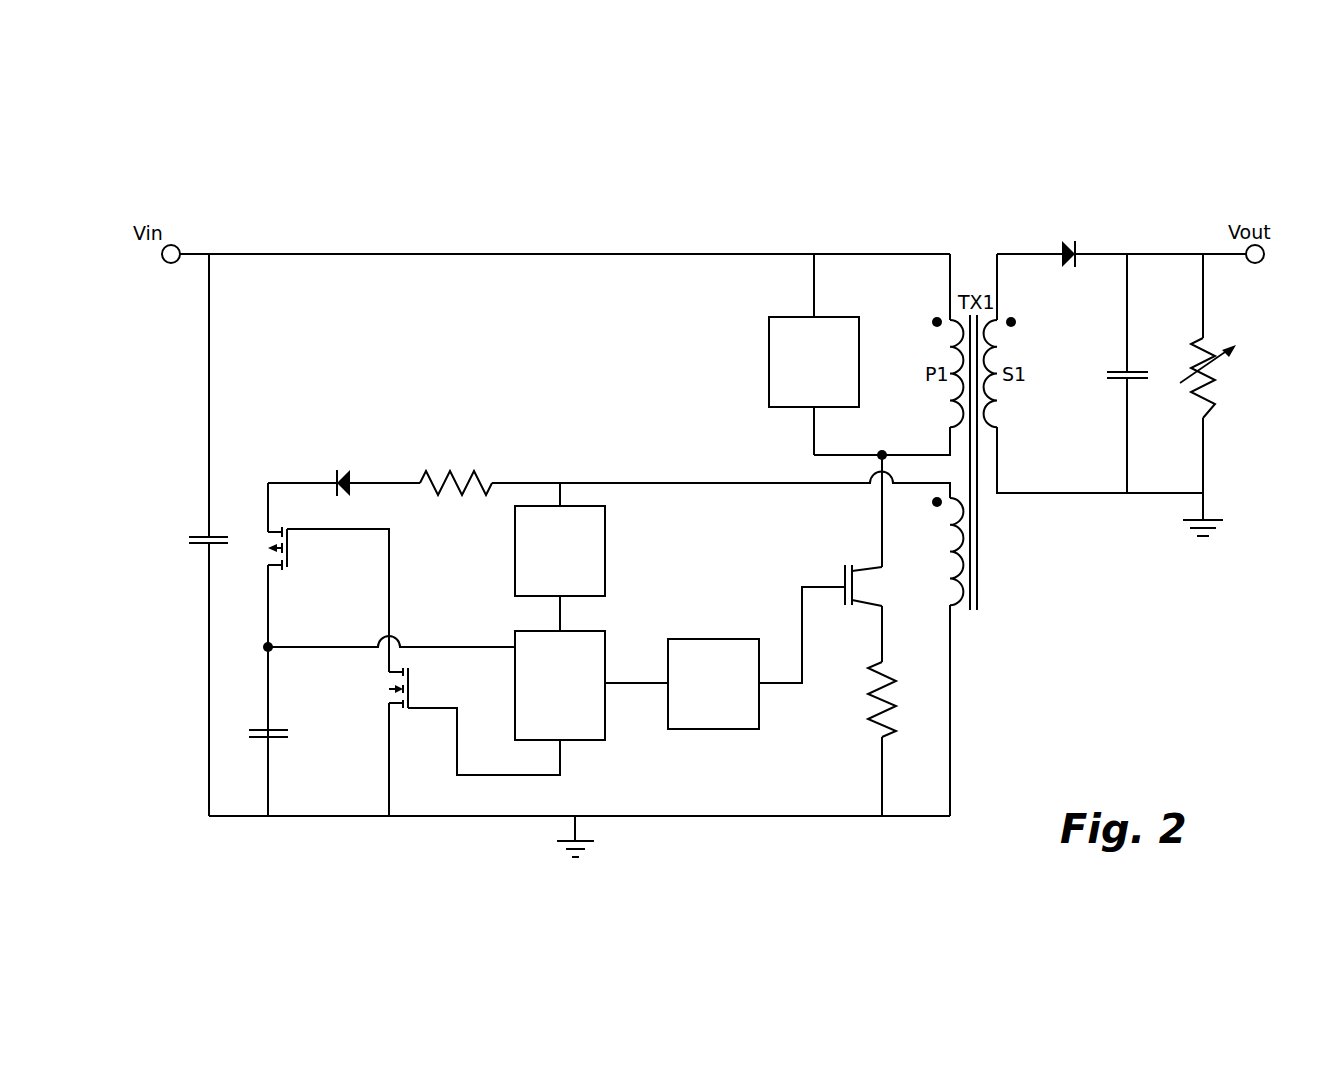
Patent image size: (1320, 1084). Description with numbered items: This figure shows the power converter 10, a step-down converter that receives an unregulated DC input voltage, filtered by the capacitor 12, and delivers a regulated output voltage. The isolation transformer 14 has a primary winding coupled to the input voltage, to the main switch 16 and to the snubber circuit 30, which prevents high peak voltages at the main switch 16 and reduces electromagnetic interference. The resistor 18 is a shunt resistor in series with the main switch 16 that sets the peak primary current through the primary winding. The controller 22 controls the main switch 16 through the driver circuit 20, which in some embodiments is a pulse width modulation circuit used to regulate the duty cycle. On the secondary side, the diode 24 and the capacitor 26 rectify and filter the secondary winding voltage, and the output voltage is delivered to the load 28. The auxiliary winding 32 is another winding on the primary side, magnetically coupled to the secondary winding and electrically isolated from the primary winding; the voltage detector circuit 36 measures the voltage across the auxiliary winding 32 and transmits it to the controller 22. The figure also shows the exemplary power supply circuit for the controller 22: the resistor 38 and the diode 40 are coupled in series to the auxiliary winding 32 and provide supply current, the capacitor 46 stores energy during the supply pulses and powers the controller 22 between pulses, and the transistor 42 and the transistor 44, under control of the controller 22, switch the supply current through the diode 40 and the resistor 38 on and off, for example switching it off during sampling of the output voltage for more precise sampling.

The power converter 10 is at (1066, 155).
The capacitor 12 is at (190, 532).
The isolation transformer 14 is at (967, 280).
The main switch 16 is at (878, 571).
The resistor 18 is at (897, 688).
The driver circuit 20 is at (759, 726).
The controller 22 is at (605, 736).
The diode 24 is at (1081, 240).
The capacitor 26 is at (1141, 372).
The load 28 is at (1222, 372).
The snubber circuit 30 is at (768, 400).
The auxiliary winding 32 is at (940, 528).
The voltage detector circuit 36 is at (515, 583).
The resistor 38 is at (480, 466).
The diode 40 is at (333, 463).
The transistor 42 is at (266, 537).
The transistor 44 is at (386, 681).
The capacitor 46 is at (252, 727).